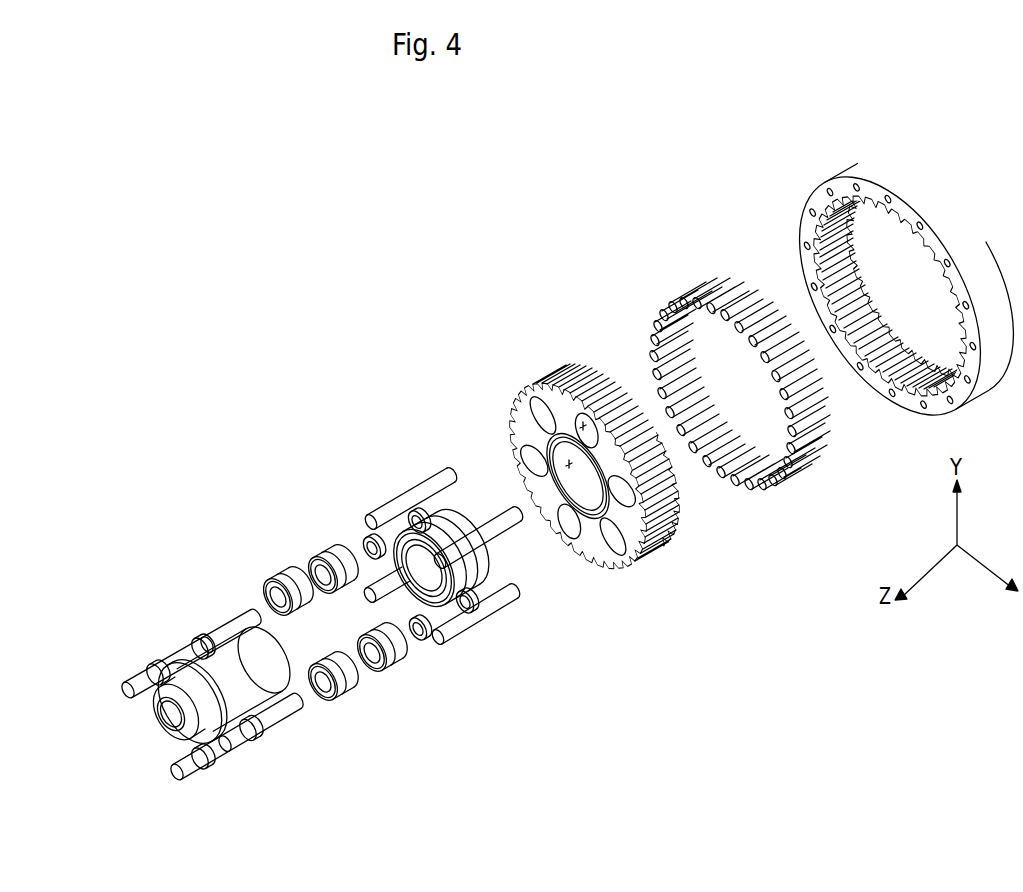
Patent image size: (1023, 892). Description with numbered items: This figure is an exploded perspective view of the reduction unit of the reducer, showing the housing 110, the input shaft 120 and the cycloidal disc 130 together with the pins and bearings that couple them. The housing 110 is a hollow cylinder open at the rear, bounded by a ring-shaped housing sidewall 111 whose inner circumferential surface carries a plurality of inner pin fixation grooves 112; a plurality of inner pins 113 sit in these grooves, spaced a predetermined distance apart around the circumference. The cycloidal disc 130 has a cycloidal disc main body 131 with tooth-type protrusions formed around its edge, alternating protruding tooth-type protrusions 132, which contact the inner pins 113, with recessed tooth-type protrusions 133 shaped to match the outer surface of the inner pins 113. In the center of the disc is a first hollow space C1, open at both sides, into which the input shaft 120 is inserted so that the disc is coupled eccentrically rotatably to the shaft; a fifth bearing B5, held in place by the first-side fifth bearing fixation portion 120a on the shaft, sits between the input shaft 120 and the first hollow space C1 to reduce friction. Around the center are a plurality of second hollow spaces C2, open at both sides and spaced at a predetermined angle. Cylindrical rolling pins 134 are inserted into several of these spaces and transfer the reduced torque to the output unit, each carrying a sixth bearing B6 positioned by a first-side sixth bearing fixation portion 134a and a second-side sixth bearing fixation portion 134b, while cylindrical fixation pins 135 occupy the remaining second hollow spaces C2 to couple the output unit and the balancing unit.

The housing 110 is at (822, 96).
The housing sidewall 111 is at (850, 178).
The inner pin fixation grooves 112 is at (814, 226).
The inner pins 113 is at (673, 298).
The input shaft 120 is at (208, 659).
The first-side fifth bearing fixation portion 120a is at (160, 746).
The cycloidal disc 130 is at (583, 464).
The cycloidal disc main body 131 is at (645, 552).
The protruding tooth-type protrusion 132 is at (588, 398).
The recessed tooth-type protrusion 133 is at (607, 410).
The rolling pins 134 is at (207, 705).
The first-side sixth bearing fixation portion 134a is at (198, 640).
The second-side sixth bearing fixation portion 134b is at (364, 538).
The fixation pins 135 is at (428, 466).
The fifth bearing B5 is at (466, 505).
The sixth bearing B6 is at (280, 580).
The first hollow space C1 is at (568, 462).
The second hollow spaces C2 is at (583, 425).